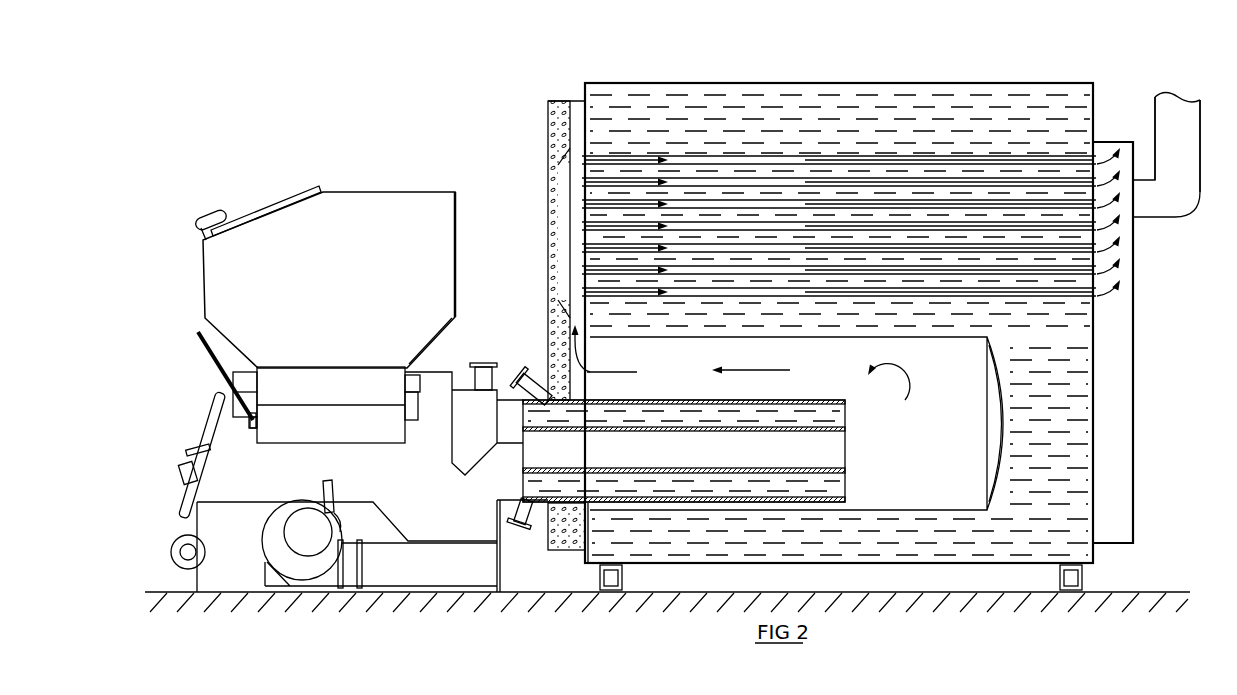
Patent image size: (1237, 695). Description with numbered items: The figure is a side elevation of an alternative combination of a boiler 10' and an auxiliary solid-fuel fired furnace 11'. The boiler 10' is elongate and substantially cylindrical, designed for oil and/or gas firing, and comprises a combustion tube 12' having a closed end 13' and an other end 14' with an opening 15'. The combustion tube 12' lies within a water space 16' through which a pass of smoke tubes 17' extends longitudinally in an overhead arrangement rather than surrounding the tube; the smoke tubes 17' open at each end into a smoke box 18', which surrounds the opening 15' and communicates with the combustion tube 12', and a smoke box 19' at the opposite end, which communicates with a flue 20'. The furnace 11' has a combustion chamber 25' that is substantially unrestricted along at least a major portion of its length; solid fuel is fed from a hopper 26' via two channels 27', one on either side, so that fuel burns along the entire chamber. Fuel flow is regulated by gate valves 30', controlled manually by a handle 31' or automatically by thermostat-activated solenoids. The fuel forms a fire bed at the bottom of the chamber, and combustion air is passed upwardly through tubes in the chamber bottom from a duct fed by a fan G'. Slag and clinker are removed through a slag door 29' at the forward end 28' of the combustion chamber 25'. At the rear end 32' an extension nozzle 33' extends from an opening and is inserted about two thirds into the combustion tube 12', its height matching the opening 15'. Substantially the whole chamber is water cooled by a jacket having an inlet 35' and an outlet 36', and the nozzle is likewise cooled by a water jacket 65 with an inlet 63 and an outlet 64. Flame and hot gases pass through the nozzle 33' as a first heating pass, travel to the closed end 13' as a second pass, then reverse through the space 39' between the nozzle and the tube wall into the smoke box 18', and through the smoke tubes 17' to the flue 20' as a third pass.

The boiler 10' is at (839, 298).
The auxiliary solid-fuel fired furnace 11' is at (264, 187).
The combustion tube 12' is at (796, 423).
The closed end 13' is at (977, 423).
The other end 14' is at (592, 323).
The opening 15' is at (552, 250).
The water space 16' is at (881, 325).
The smoke tubes 17' is at (1132, 342).
The smoke box 18' is at (797, 224).
The smoke box 19' is at (1159, 157).
The flue 20' is at (1196, 143).
The combustion chamber 25' is at (198, 452).
The hopper 26' is at (329, 256).
The channels 27' is at (319, 382).
The forward end 28' is at (147, 539).
The slag door 29' is at (173, 460).
The gate valves 30' is at (464, 407).
The handle 31' is at (191, 380).
The rear end 32' is at (507, 567).
The extension nozzle 33' is at (841, 574).
The inlet 35' is at (490, 351).
The outlet 36' is at (163, 563).
The space 39' is at (786, 372).
The inlet flow connector 63 is at (518, 382).
The outlet flow connector 64 is at (520, 530).
The water jacket 65 is at (832, 482).
The fan G' is at (379, 557).